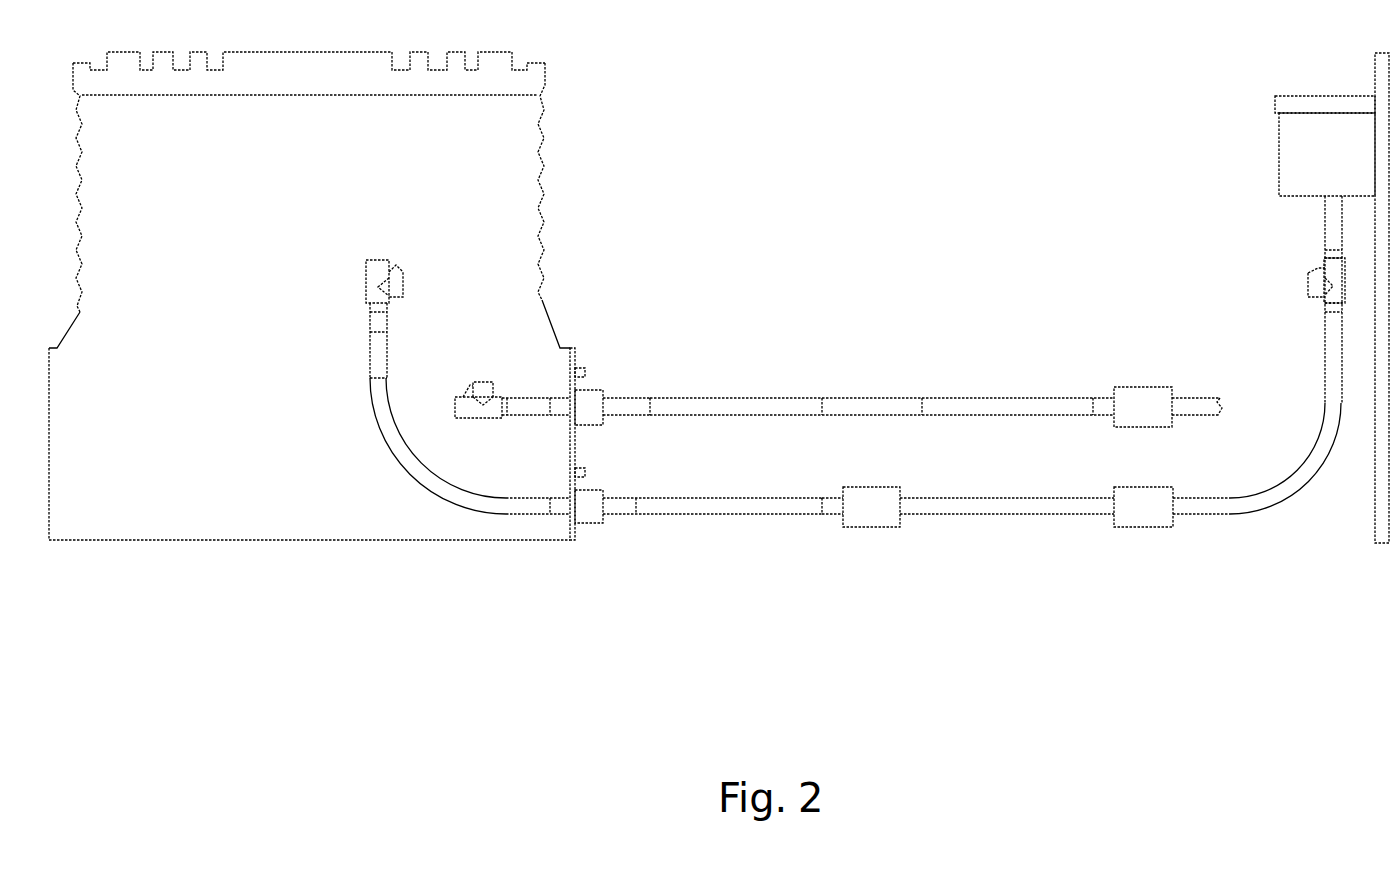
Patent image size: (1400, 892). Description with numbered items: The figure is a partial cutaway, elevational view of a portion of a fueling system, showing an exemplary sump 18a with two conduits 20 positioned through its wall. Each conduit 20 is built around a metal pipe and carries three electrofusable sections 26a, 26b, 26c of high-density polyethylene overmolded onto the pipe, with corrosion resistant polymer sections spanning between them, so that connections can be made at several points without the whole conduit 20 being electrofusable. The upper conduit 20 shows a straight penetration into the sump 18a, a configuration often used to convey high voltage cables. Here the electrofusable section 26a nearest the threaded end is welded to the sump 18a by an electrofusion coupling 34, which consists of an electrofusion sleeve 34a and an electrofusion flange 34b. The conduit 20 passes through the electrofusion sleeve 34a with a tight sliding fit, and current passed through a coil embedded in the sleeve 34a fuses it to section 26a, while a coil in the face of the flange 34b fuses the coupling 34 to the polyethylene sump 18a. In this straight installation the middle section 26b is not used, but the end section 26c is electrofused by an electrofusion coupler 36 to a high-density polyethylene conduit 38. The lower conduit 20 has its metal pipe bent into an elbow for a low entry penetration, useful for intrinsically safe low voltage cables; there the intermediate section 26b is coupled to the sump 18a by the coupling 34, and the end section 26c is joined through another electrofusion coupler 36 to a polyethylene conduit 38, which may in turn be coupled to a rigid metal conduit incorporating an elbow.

The sump 18a is at (488, 161).
The conduit 20 is at (792, 421).
The electrofusable section 26a is at (375, 352).
The electrofusable section 26b is at (895, 405).
The electrofusable section 26c is at (1102, 408).
The electrofusion coupling 34 is at (623, 445).
The electrofusion sleeve 34a is at (592, 414).
The electrofusion flange 34b is at (588, 370).
The electrofusion coupler 36 is at (1145, 400).
The high-density polyethylene conduit 38 is at (1202, 405).